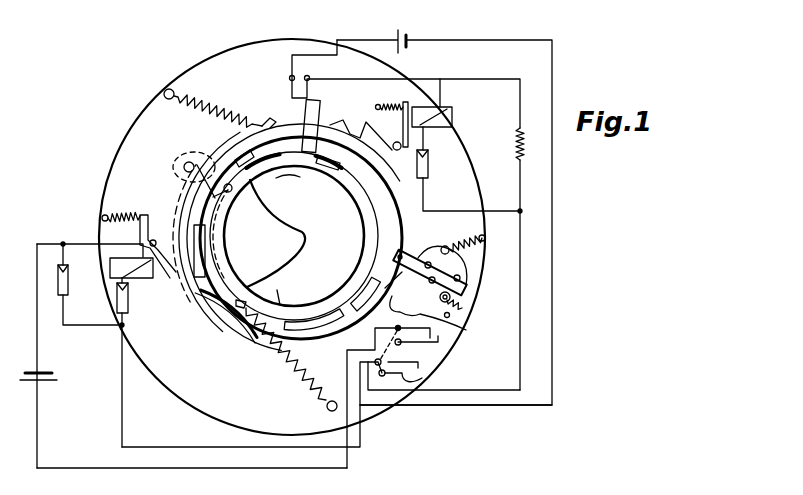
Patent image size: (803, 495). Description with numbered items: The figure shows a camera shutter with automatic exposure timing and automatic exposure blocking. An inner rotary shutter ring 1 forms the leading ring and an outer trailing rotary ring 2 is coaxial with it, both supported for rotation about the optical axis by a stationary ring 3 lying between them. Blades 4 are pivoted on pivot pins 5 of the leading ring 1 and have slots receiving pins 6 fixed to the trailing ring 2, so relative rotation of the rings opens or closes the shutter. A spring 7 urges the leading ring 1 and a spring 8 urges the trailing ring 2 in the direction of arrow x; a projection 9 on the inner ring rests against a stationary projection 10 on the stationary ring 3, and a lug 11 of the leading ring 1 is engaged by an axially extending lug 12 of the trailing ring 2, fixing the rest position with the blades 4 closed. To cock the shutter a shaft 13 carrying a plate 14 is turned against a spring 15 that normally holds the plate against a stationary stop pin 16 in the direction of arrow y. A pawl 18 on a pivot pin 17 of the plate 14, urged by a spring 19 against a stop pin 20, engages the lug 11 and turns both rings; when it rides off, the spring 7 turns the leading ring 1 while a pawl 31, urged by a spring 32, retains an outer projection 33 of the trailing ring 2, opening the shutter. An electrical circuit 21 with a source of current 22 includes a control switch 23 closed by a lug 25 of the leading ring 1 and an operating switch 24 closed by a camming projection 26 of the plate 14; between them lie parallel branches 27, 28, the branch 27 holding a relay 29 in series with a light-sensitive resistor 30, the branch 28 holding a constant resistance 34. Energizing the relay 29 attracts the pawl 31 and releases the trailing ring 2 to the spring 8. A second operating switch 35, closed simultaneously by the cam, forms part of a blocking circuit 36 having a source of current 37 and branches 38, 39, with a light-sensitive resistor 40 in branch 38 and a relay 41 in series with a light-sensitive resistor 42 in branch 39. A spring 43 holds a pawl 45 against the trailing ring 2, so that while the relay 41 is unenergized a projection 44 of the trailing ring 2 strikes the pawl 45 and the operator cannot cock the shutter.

The inner rotary shutter ring 1 is at (346, 192).
The outer trailing rotary ring 2 is at (226, 326).
The stationary ring 3 is at (381, 204).
The blades 4 is at (282, 225).
The pivot pins 5 is at (233, 189).
The pins 6 is at (202, 162).
The spring 7 is at (291, 356).
The spring 8 is at (214, 98).
The projection 9 is at (210, 232).
The stationary projection 10 is at (222, 254).
The lug 11 is at (365, 256).
The axially extending lug 12 is at (352, 282).
The shaft 13 is at (470, 296).
The plate 14 is at (466, 316).
The spring 15 is at (455, 243).
The stationary stop pin 16 is at (482, 253).
The pivot pin 17 is at (414, 258).
The pawl 18 is at (366, 232).
The spring 19 is at (455, 300).
The stop pin 20 is at (426, 273).
The electrical circuit 21 is at (552, 248).
The source of current 22 is at (412, 36).
The control switch 23 is at (292, 96).
The operating switch 24 is at (428, 380).
The lug 25 is at (322, 106).
The camming projection 26 is at (460, 340).
The branch 27 is at (424, 196).
The branch 28 is at (520, 189).
The relay 29 is at (450, 114).
The light-sensitive resistor 30 is at (428, 165).
The pawl 31 is at (397, 151).
The spring 32 is at (392, 106).
The outer projection 33 is at (338, 118).
The constant resistance 34 is at (516, 135).
The second operating switch 35 is at (398, 328).
The blocking circuit 36 is at (70, 468).
The source of current 37 is at (45, 372).
The branch 38 is at (65, 313).
The branch 39 is at (124, 279).
The light-sensitive resistor 40 is at (70, 258).
The relay 41 is at (120, 256).
The light-sensitive resistor 42 is at (128, 310).
The spring 43 is at (127, 212).
The projection 44 is at (196, 300).
The pawl 45 is at (160, 238).